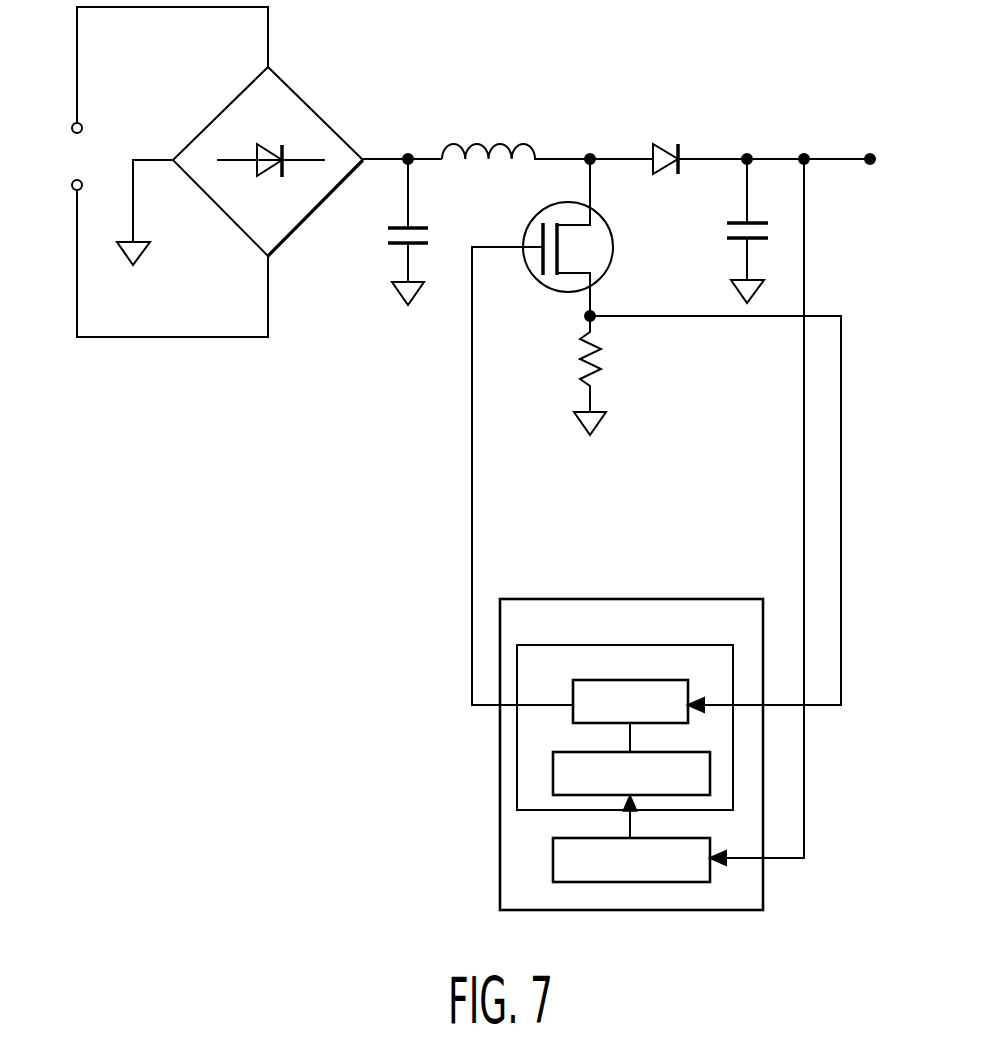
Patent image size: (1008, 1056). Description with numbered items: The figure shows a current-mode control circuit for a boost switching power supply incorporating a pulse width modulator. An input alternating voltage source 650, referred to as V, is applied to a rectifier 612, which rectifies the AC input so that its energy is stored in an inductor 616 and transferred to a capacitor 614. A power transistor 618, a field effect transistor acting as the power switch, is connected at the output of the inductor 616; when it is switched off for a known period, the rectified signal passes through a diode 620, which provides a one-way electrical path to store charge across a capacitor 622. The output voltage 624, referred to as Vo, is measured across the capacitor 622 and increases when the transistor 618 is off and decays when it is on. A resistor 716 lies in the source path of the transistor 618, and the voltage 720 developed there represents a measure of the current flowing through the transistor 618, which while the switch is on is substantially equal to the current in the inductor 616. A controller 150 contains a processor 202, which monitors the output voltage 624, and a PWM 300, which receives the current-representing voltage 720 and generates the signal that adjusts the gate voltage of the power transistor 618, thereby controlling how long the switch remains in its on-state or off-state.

The controller 150 is at (765, 890).
The processor 202 is at (553, 858).
The pulse width modulator 300 is at (572, 713).
The rectifier 612 is at (313, 103).
The capacitor 614 is at (383, 235).
The inductor 616 is at (478, 140).
The power transistor 618 is at (540, 288).
The diode 620 is at (663, 143).
The capacitor 622 is at (722, 233).
The output voltage 624 is at (868, 170).
The AC voltage source 650 is at (63, 160).
The resistor 716 is at (583, 358).
The voltage 720 is at (843, 571).